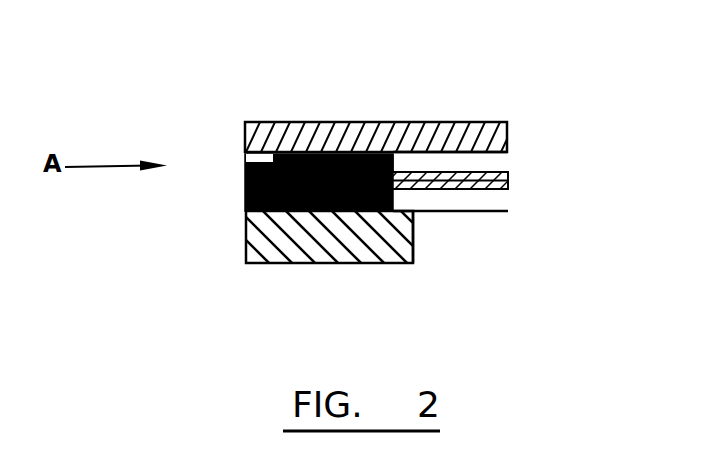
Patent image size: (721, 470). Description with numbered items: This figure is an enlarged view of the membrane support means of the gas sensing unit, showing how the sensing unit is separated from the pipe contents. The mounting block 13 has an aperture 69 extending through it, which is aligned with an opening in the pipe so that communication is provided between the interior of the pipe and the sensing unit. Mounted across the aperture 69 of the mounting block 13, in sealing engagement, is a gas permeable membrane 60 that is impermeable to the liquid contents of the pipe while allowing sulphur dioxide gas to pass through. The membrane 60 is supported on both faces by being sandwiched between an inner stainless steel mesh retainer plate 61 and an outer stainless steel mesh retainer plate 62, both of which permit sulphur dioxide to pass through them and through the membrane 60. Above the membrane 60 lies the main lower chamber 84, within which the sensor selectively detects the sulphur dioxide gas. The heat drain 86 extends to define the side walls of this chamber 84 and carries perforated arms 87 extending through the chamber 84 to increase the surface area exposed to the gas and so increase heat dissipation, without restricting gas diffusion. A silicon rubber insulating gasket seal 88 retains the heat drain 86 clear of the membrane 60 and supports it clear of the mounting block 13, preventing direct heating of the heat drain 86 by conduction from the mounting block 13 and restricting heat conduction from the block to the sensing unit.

The mounting block 13 is at (266, 248).
The gas permeable membrane 60 is at (503, 180).
The inner stainless steel mesh retainer plate 61 is at (503, 171).
The outer stainless steel mesh retainer plate 62 is at (505, 192).
The aperture 69 is at (455, 242).
The lower chamber 84 is at (427, 160).
The heat drain 86 is at (257, 123).
The perforated arms 87 is at (466, 131).
The gasket seal 88 is at (323, 123).